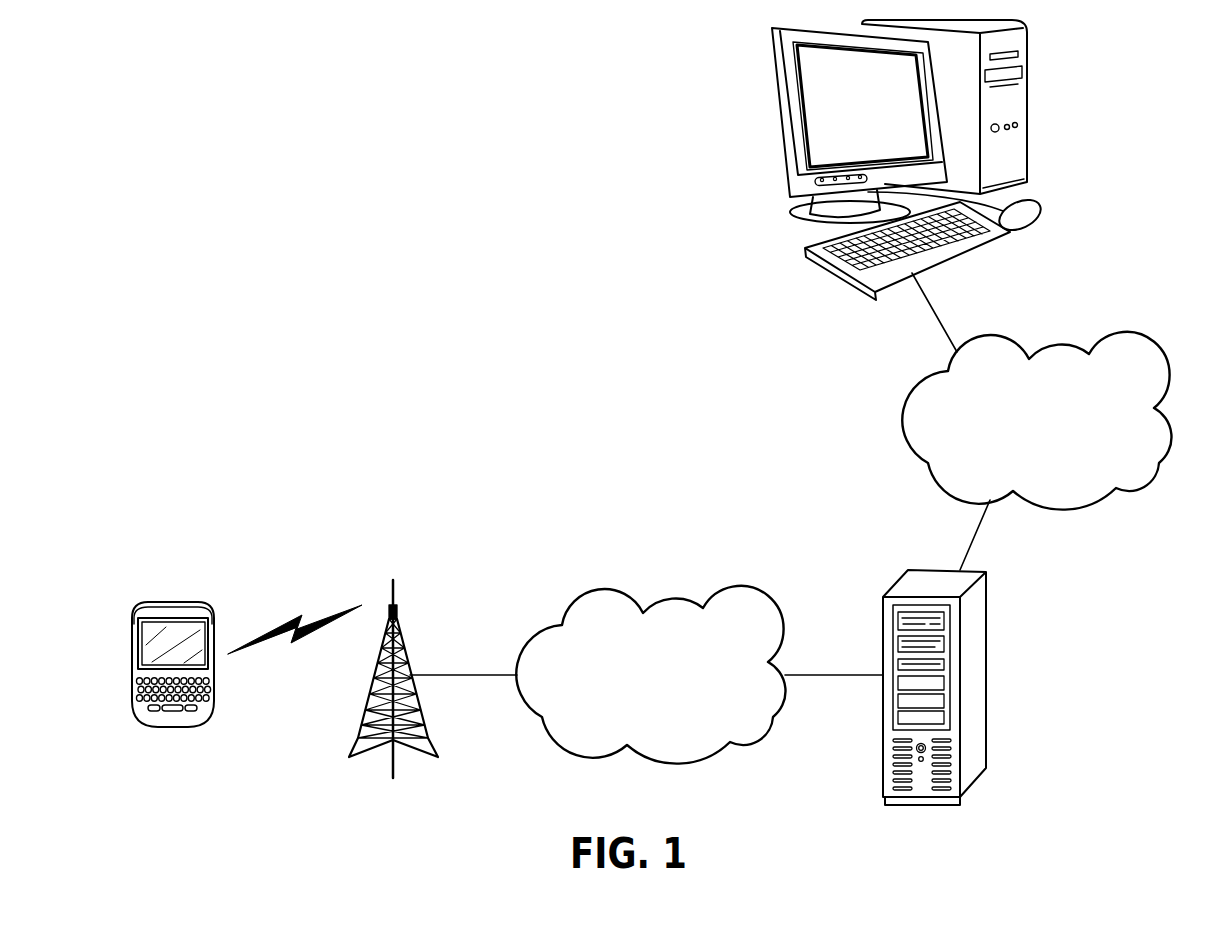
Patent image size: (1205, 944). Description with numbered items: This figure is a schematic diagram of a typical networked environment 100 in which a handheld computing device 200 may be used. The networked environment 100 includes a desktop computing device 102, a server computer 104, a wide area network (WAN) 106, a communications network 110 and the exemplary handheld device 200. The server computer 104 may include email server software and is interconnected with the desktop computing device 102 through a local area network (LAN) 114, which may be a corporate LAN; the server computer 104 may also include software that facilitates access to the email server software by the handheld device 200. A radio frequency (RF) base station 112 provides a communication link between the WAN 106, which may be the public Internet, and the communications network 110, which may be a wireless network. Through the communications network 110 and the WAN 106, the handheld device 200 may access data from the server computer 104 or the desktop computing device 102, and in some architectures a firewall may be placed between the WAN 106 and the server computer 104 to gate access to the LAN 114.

The networked environment 100 is at (447, 207).
The desktop computing device 102 is at (1026, 107).
The server computer 104 is at (988, 658).
The wide area network (WAN) 106 is at (668, 702).
The communications network 110 is at (299, 598).
The radio frequency (RF) base station 112 is at (395, 593).
The local area network (LAN) 114 is at (1055, 449).
The handheld computing device 200 is at (173, 603).